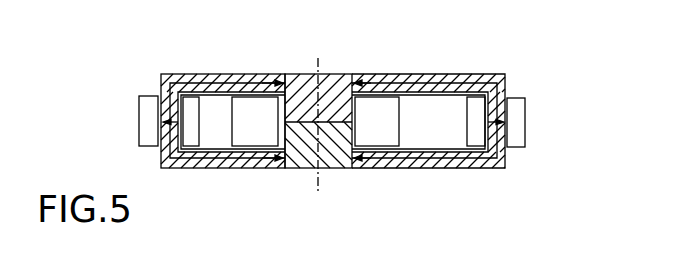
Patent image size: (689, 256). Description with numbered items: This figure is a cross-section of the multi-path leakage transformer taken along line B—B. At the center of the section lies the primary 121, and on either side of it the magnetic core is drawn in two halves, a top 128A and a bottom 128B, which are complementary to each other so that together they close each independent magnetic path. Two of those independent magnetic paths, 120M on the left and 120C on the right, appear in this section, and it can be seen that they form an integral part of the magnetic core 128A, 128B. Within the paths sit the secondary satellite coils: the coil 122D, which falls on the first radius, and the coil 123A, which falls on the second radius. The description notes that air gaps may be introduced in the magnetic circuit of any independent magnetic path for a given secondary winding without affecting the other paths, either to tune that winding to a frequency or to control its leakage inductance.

The independent magnetic path 120M is at (190, 80).
The secondary satellite coil 122D is at (150, 95).
The primary 121 is at (374, 105).
The independent magnetic path 120C is at (415, 86).
The magnetic core top half 128A is at (505, 80).
The magnetic core bottom half 128B is at (472, 168).
The secondary satellite coil 123A is at (518, 97).